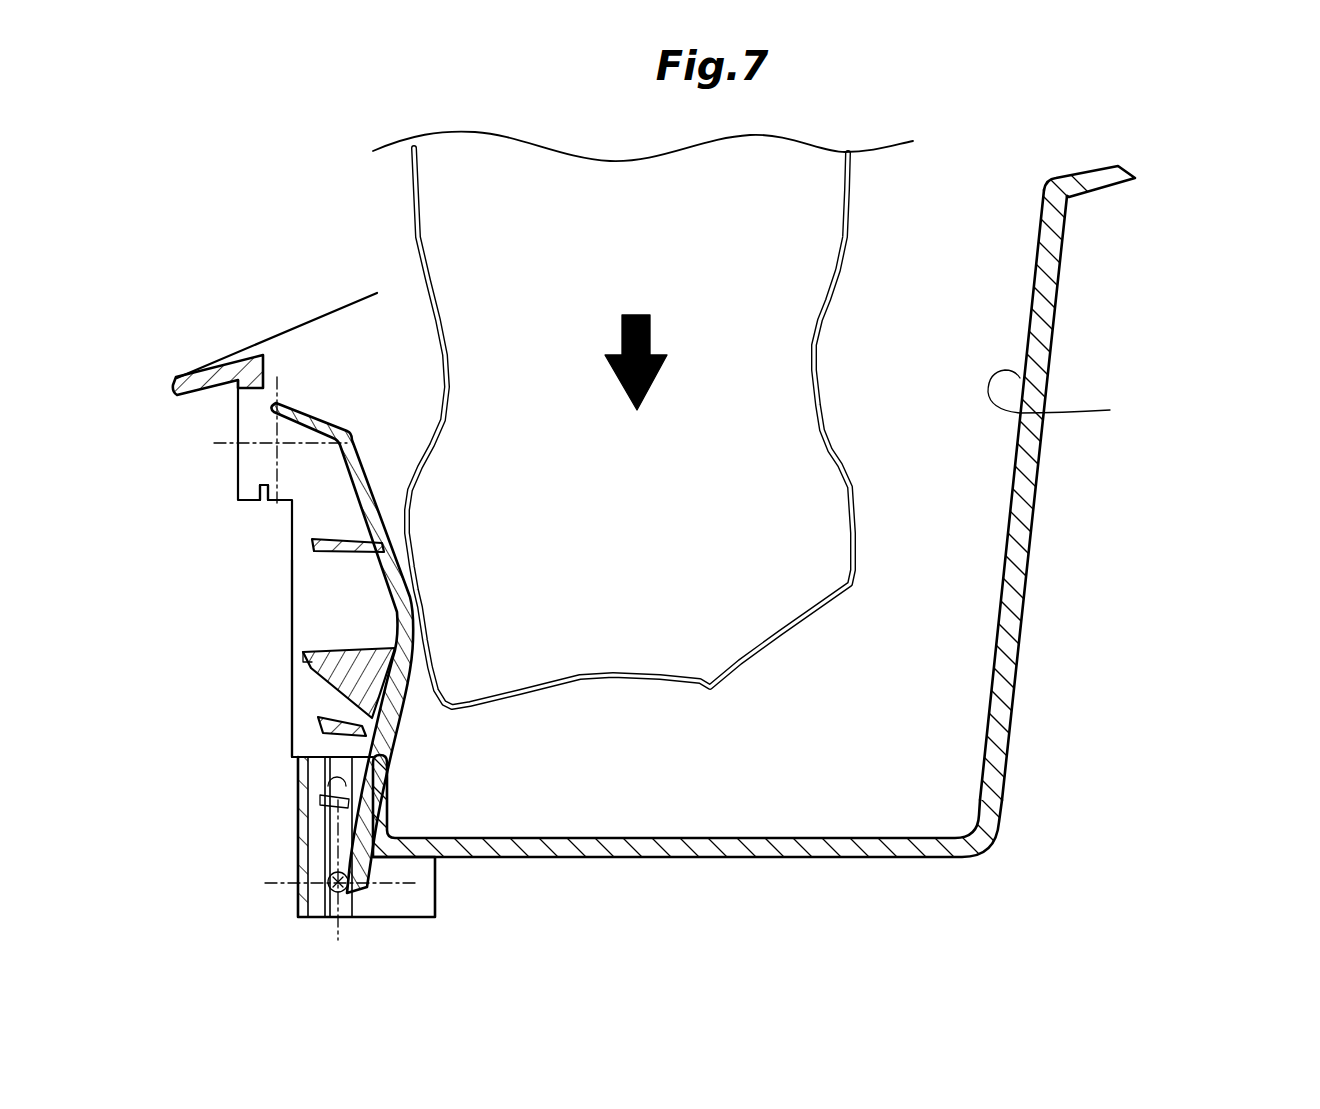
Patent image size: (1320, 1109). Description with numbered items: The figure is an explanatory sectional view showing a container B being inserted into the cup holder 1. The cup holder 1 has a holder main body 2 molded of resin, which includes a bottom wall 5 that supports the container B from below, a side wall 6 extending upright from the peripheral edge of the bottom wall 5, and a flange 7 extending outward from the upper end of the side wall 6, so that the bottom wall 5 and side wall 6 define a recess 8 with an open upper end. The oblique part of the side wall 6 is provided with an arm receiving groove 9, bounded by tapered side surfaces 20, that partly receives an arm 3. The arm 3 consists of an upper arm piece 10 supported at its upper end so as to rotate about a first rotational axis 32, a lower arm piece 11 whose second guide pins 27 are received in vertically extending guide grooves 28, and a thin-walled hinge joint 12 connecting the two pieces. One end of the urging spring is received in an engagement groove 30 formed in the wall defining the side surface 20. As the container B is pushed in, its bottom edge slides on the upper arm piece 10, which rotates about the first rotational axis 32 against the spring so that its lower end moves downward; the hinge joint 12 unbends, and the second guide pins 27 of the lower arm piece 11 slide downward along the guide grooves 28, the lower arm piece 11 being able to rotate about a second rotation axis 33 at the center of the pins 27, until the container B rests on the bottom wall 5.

The cup holder 1 is at (1190, 116).
The holder main body 2 is at (784, 511).
The arm 3 is at (344, 416).
The bottom wall 5 is at (822, 846).
The side wall 6 is at (1025, 577).
The flange 7 is at (1082, 180).
The recess 8 is at (1060, 400).
The arm receiving groove 9 is at (312, 589).
The upper arm piece 10 is at (363, 487).
The lower arm piece 11 is at (370, 750).
The hinge joint 12 is at (410, 617).
The side surface 20 is at (308, 698).
The second guide pin 27 is at (330, 893).
The guide groove 28 is at (325, 781).
The engagement groove 30 is at (264, 498).
The first rotational axis 32 is at (277, 443).
The second rotation axis 33 is at (330, 878).
The container B is at (848, 207).